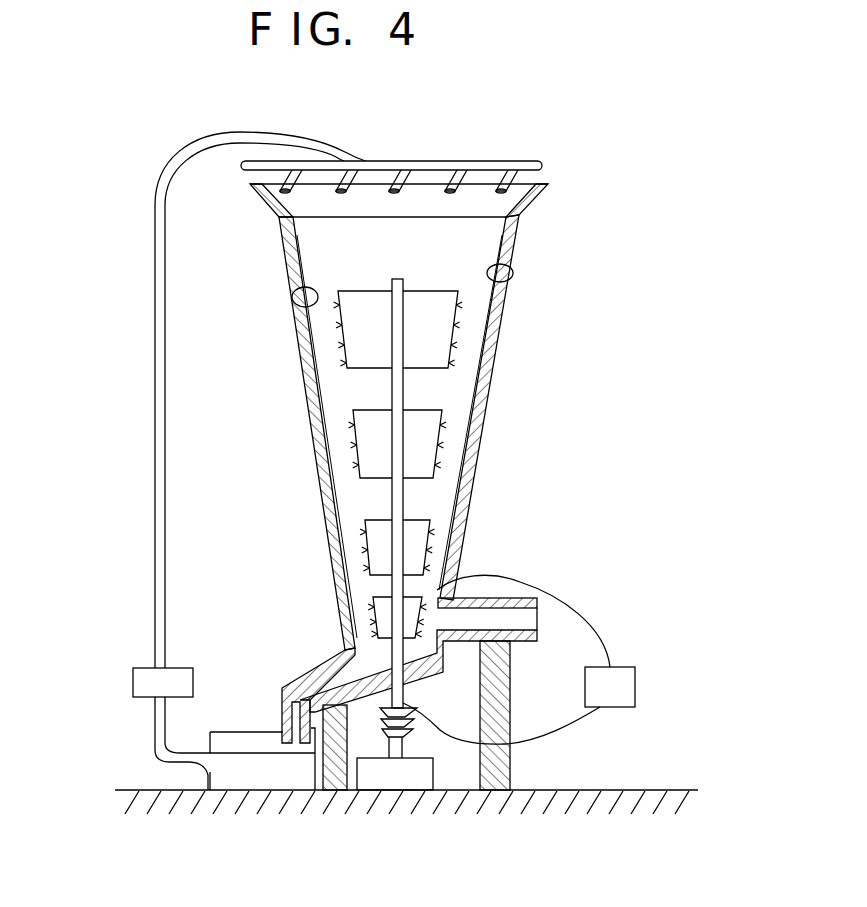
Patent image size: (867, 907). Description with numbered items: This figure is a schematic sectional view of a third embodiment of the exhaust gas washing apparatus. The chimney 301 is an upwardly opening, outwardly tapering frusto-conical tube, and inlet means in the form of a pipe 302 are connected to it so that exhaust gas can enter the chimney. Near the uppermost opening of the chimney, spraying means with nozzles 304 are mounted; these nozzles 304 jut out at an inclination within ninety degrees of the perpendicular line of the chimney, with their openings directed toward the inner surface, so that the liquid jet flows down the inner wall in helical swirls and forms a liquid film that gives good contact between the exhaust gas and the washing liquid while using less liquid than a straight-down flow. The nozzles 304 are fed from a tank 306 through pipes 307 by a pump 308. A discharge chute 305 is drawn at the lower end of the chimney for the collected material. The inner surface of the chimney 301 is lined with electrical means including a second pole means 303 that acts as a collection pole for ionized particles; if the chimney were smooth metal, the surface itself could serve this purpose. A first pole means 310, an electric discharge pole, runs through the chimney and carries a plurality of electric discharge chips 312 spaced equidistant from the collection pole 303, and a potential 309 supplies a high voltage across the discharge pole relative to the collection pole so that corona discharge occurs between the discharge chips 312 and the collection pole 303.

The chimney 301 is at (478, 422).
The pipe 302 is at (522, 633).
The second pole means 303 is at (300, 305).
The nozzles 304 is at (352, 183).
The discharge chute 305 is at (322, 684).
The tank 306 is at (262, 738).
The pipes 307 is at (165, 600).
The pump 308 is at (178, 672).
The potential 309 is at (620, 697).
The first pole means 310 is at (402, 281).
The electric discharge chips 312 is at (456, 362).